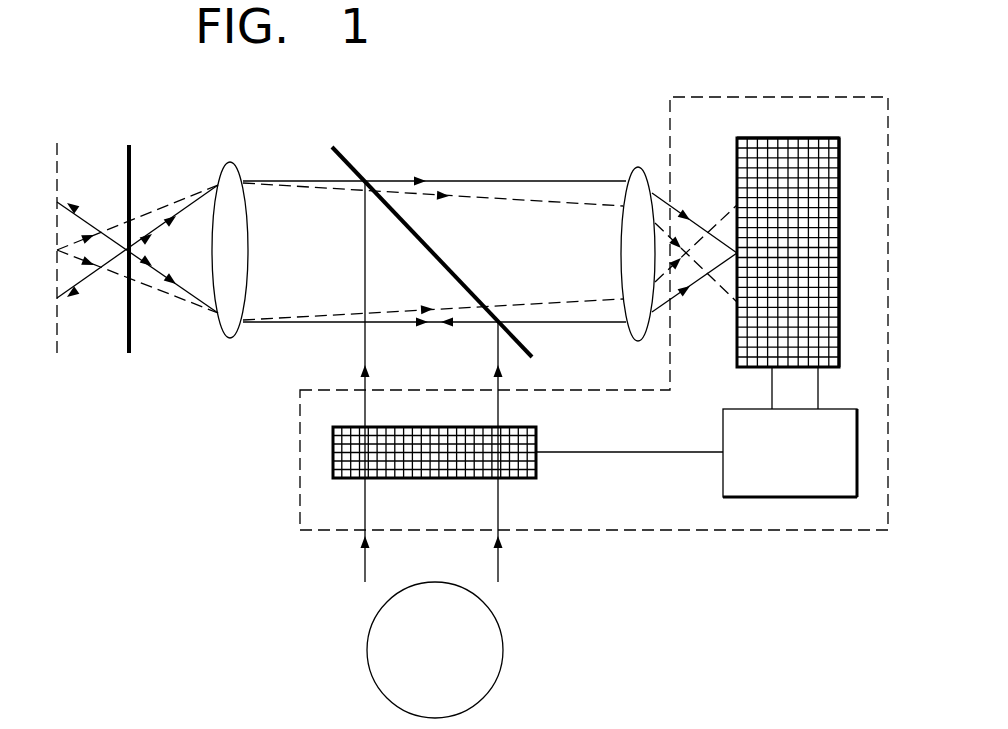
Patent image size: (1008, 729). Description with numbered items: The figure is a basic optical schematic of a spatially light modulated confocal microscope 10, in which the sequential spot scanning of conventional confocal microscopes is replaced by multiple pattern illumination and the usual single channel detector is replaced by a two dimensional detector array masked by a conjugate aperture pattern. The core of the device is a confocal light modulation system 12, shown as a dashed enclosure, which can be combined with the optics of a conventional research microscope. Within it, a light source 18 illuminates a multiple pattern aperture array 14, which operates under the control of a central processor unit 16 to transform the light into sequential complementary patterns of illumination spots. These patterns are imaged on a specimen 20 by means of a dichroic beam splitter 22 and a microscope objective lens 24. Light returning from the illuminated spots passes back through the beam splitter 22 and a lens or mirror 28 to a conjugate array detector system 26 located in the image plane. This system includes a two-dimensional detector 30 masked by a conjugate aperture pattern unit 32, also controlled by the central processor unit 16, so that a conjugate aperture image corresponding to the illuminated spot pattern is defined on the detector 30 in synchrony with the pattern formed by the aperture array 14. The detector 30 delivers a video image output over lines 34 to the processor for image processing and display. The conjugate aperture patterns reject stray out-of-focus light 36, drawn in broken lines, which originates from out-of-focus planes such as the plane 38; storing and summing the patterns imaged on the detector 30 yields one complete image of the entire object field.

The spatially light modulated confocal microscope 10 is at (763, 582).
The confocal light modulation system 12 is at (625, 530).
The multiple pattern aperture array 14 is at (333, 447).
The central processor unit 16 is at (835, 488).
The light source 18 is at (483, 677).
The specimen 20 is at (131, 168).
The dichroic beam splitter 22 is at (352, 162).
The microscope objective lens 24 is at (228, 162).
The conjugate array detector system 26 is at (837, 125).
The lens or mirror 28 is at (637, 167).
The two-dimensional detector 30 is at (839, 257).
The conjugate aperture pattern unit 32 is at (760, 138).
The lines 34 is at (818, 388).
The stray out-of-focus light 36 is at (720, 218).
The out-of-focus plane 38 is at (58, 328).